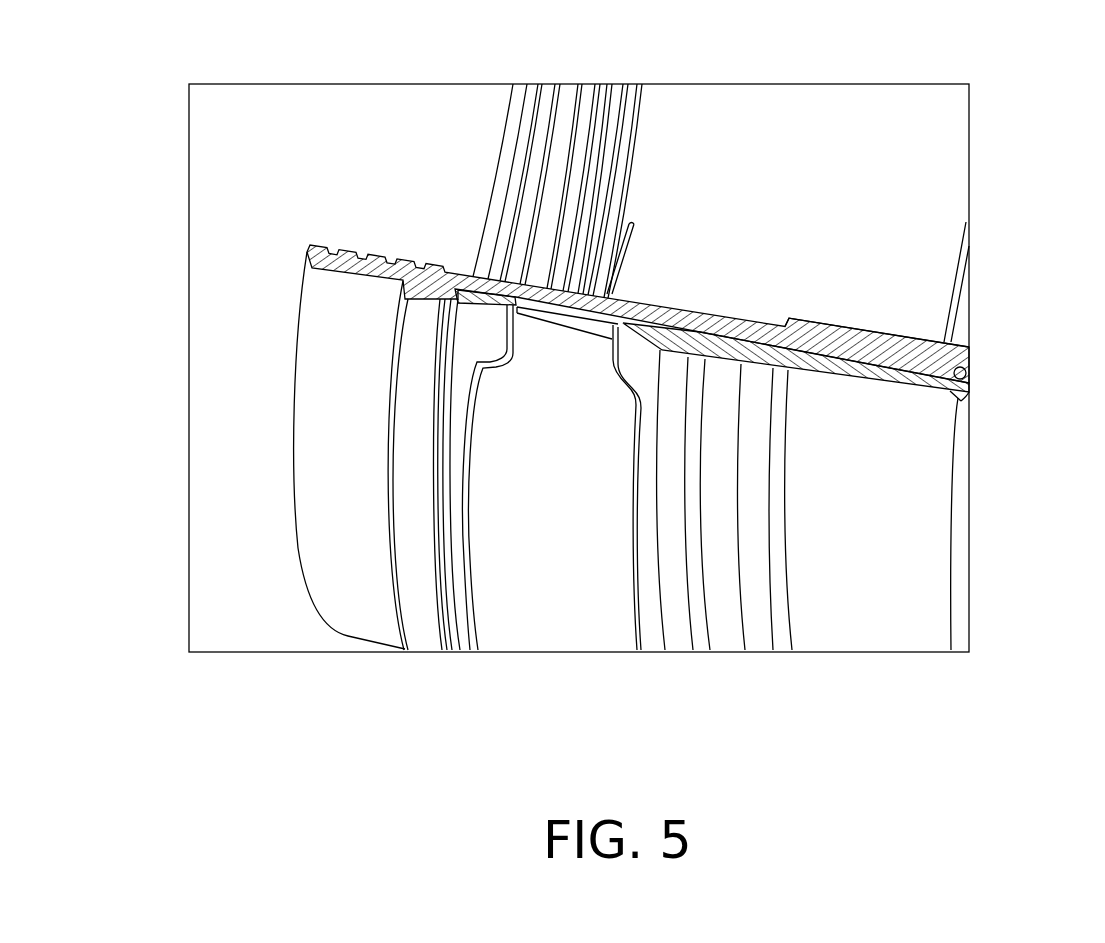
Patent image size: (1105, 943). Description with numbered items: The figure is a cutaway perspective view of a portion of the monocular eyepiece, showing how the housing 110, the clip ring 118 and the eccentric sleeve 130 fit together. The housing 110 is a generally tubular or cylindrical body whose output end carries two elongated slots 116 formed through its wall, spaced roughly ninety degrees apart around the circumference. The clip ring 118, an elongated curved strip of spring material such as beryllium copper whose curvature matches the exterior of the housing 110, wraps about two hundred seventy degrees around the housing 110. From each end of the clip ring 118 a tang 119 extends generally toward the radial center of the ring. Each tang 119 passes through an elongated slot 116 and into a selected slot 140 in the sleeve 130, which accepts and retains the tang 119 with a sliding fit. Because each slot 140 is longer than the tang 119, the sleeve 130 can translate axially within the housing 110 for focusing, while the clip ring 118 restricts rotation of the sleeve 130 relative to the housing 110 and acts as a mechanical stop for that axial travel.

The housing 110 is at (968, 395).
The elongated slot 116 is at (518, 298).
The clip ring 118 is at (637, 428).
The tang 119 is at (602, 298).
The eccentric sleeve 130 is at (960, 338).
The slot 140 is at (833, 325).